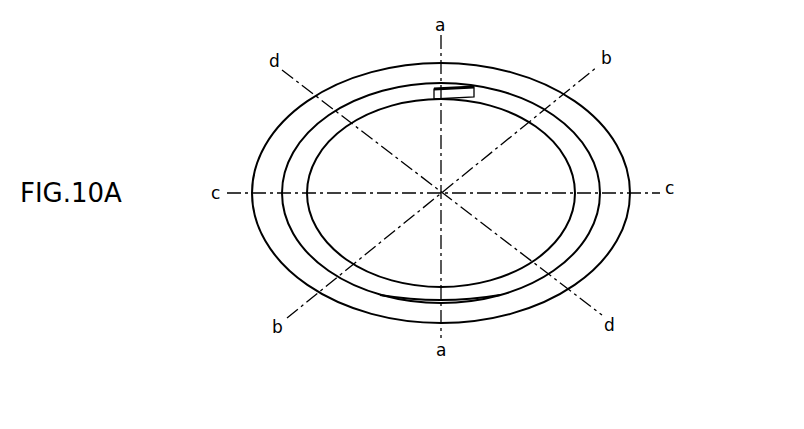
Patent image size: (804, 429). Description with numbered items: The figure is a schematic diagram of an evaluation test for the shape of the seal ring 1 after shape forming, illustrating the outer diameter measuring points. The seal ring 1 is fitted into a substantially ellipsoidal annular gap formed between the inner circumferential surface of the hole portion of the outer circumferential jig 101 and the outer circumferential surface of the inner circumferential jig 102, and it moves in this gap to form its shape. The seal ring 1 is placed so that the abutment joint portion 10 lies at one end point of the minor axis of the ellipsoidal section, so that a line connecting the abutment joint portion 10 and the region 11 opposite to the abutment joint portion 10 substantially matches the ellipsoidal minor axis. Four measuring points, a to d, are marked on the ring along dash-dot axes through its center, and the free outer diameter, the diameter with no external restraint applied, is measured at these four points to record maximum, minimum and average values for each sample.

The seal ring 1 is at (575, 152).
The abutment joint portion 10 is at (483, 95).
The region opposite to the abutment joint portion 11 is at (455, 293).
The outer circumferential jig 101 is at (278, 242).
The inner circumferential jig 102 is at (340, 152).